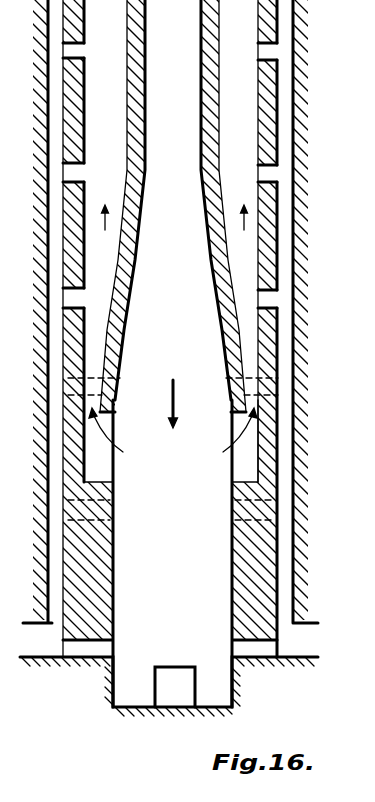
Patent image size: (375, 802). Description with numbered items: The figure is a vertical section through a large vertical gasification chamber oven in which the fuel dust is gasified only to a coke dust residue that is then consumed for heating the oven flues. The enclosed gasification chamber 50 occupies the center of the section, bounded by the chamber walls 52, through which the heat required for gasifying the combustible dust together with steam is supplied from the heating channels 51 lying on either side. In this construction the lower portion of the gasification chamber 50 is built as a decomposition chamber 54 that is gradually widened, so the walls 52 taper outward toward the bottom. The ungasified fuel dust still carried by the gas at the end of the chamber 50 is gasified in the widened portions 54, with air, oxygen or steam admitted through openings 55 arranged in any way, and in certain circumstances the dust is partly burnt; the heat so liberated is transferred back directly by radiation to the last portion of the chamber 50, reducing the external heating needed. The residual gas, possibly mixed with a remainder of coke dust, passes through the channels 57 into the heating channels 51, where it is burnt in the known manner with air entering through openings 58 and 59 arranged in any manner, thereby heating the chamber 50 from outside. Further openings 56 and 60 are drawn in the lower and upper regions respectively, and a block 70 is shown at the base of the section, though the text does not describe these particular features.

The gasification chamber 50 is at (175, 244).
The heating channels 51 is at (187, 401).
The chamber walls 52 is at (207, 120).
The decomposition chamber 54 is at (187, 401).
The openings 55 is at (219, 648).
The inlet openings 56 is at (334, 640).
The channels 57 is at (173, 406).
The openings 58 is at (262, 295).
The openings 59 is at (258, 178).
The opening 60 is at (260, 56).
The base block 70 is at (179, 697).